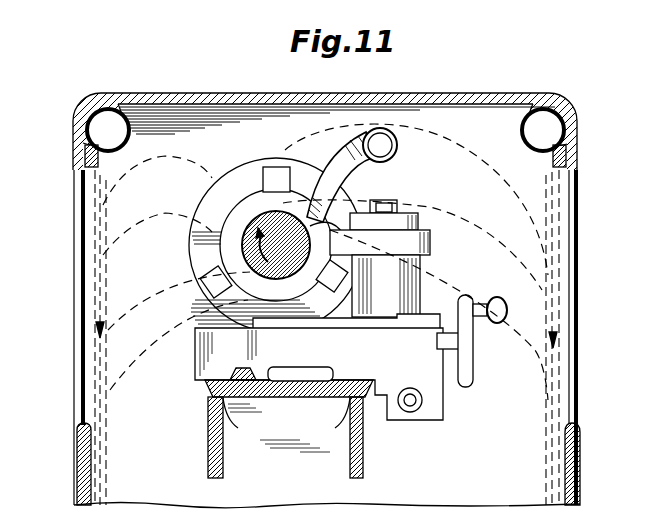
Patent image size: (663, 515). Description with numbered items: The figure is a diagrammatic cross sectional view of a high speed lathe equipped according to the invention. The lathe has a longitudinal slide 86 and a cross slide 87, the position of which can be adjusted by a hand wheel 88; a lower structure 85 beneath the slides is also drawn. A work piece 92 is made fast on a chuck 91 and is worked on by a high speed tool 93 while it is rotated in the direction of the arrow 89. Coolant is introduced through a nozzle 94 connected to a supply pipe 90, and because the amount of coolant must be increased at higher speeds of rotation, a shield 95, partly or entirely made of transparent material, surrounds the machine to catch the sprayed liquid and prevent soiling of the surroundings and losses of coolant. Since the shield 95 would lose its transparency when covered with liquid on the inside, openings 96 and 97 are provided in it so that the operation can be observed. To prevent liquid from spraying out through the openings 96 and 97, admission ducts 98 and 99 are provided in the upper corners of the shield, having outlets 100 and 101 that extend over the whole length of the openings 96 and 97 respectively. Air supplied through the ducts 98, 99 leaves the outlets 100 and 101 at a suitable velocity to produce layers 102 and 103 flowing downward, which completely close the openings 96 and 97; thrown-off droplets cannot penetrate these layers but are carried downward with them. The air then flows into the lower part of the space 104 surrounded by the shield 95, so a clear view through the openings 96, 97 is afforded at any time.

The cup / holder 85 is at (208, 450).
The longitudinal slide 86 is at (319, 367).
The cross slide 87 is at (392, 292).
The hand wheel 88 is at (471, 361).
The arrow 89 is at (232, 238).
The supply pipe 90 is at (392, 147).
The chuck 91 is at (211, 211).
The work piece 92 is at (262, 217).
The high speed tool 93 is at (408, 247).
The nozzle 94 is at (378, 163).
The shield 95 is at (230, 100).
The opening 96 is at (80, 277).
The opening 97 is at (572, 272).
The admission duct 98 is at (108, 118).
The admission duct 99 is at (553, 130).
The outlet 100 is at (88, 164).
The outlet 101 is at (553, 166).
The layer 102 is at (106, 377).
The layer 103 is at (560, 399).
The space 104 is at (455, 463).